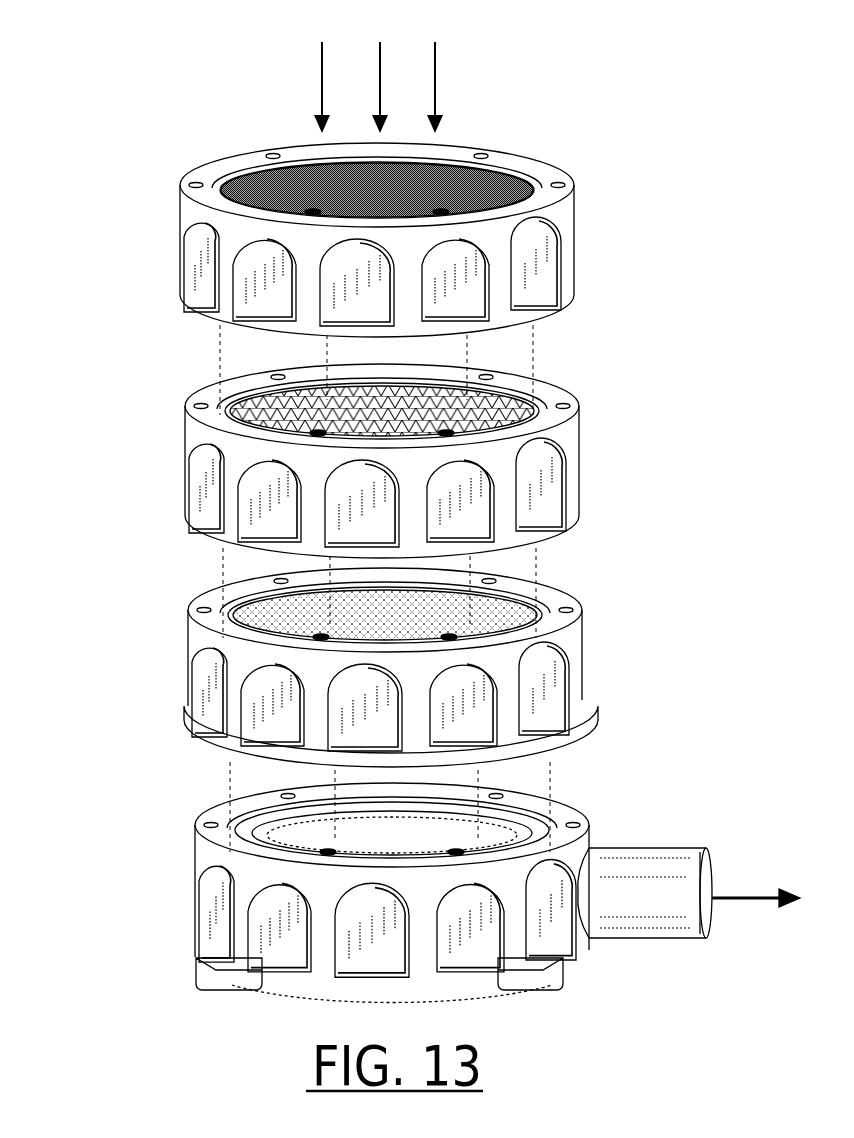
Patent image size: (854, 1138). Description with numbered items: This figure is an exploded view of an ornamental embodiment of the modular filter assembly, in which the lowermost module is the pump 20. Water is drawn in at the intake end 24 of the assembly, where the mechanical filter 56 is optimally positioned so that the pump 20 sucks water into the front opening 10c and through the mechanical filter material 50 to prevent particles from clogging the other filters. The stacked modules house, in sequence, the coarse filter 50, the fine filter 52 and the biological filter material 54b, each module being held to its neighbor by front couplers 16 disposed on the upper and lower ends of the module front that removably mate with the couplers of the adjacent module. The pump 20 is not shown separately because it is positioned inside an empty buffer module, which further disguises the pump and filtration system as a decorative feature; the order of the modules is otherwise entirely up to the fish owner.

The front opening 10c is at (283, 180).
The front couplers 16 is at (420, 201).
The pump 20 is at (195, 908).
The intake end 24 is at (498, 97).
The coarse filter 50 is at (452, 152).
The fine filter 52 is at (512, 382).
The biological filter material 54b is at (540, 582).
The mechanical filter 56 is at (578, 210).